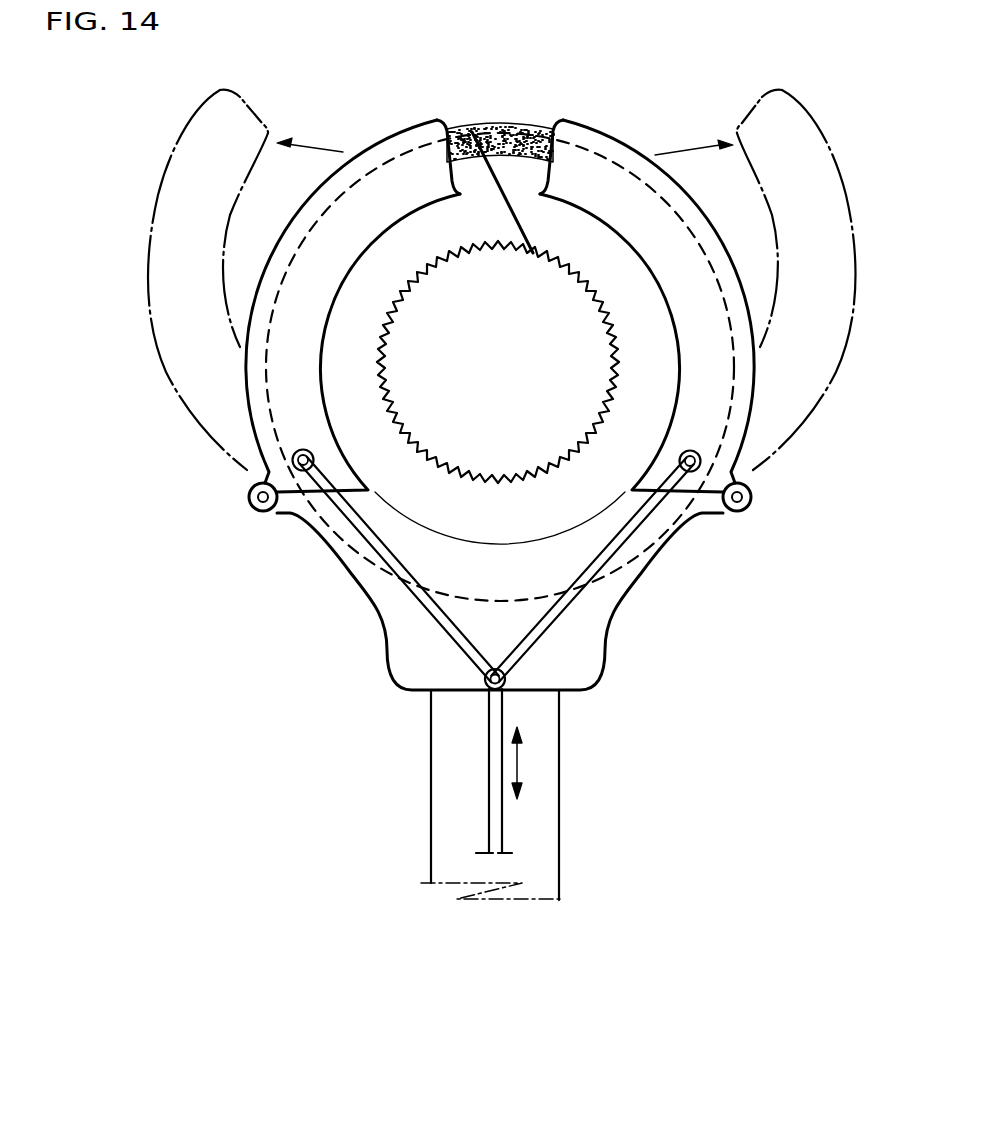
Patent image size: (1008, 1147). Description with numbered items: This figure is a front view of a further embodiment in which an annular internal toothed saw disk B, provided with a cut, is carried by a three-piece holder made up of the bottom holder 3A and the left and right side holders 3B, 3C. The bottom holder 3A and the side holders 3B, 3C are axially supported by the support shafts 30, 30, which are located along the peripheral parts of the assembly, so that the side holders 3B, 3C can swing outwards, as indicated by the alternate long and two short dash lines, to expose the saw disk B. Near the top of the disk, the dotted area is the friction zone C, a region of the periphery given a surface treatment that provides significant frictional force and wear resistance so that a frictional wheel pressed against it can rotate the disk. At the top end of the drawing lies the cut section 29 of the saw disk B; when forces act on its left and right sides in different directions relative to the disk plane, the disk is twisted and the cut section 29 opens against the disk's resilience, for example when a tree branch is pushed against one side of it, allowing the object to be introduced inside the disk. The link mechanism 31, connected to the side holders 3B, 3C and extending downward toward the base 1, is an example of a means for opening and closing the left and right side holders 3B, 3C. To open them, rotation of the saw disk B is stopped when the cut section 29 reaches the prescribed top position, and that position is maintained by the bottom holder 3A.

The shaft 1 is at (540, 835).
The bottom holder 3A is at (583, 647).
The left side holder 3B is at (293, 397).
The right side holder 3C is at (725, 385).
The cut section 29 is at (507, 193).
The support shaft 30 is at (252, 508).
The link mechanism 31 is at (440, 622).
The gear B is at (398, 307).
The friction zone C is at (480, 150).